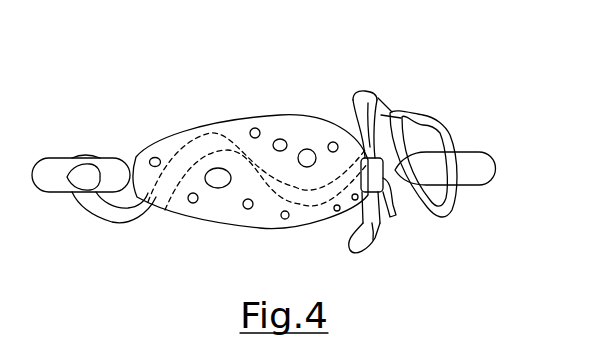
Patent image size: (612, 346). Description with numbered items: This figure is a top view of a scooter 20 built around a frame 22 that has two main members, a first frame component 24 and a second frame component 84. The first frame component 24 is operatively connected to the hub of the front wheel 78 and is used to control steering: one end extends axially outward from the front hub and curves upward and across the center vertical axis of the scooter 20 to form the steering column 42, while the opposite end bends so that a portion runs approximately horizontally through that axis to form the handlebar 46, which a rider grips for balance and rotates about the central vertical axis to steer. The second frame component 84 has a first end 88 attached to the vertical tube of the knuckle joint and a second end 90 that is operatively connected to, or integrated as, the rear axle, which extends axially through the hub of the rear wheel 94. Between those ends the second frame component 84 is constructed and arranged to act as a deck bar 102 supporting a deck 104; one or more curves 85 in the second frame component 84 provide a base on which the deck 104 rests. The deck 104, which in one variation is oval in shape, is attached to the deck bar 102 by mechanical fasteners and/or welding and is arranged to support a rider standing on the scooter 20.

The scooter 20 is at (403, 57).
The frame 22 is at (368, 88).
The first frame component 24 is at (400, 117).
The steering column 42 is at (437, 213).
The handlebar 46 is at (372, 223).
The front wheel 78 is at (480, 152).
The second frame component 84 is at (118, 218).
The curves 85 is at (200, 130).
The first end 88 is at (445, 115).
The second end 90 is at (88, 220).
The rear wheel 94 is at (65, 157).
The deck bar 102 is at (147, 207).
The deck 104 is at (232, 127).